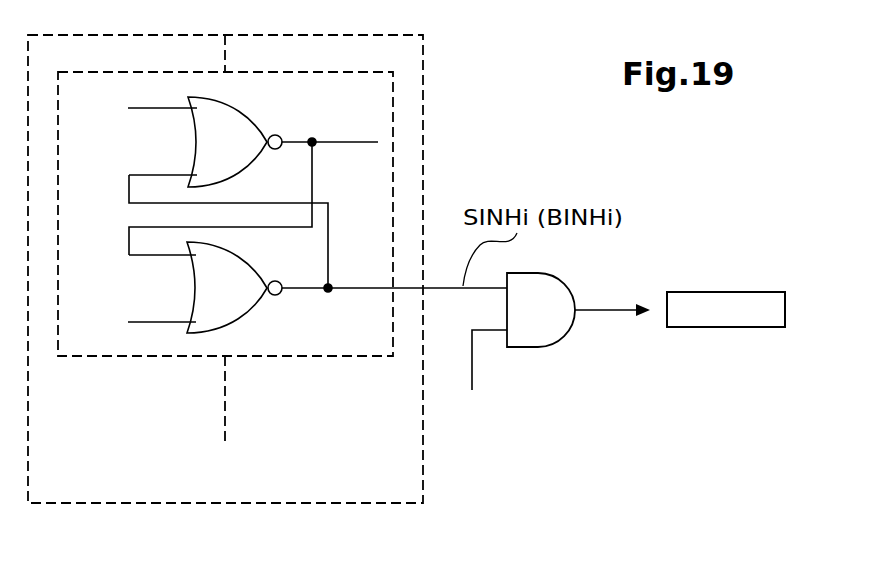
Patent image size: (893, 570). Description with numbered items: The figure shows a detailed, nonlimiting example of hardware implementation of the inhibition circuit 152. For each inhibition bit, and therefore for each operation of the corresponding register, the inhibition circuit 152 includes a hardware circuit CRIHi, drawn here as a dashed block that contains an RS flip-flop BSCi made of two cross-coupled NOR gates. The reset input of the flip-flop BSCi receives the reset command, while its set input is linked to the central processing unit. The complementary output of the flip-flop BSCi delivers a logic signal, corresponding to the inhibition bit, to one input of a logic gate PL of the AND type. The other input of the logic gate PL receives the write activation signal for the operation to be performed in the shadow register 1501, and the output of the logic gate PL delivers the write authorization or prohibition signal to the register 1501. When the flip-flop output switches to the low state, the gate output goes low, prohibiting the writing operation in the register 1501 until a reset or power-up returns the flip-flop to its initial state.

The inhibition circuit 152 is at (425, 68).
The shadow register 1501 is at (727, 286).
The hardware circuit CRIHi is at (393, 106).
The RS flip-flop BSCi is at (345, 357).
The logic gate PL is at (567, 332).